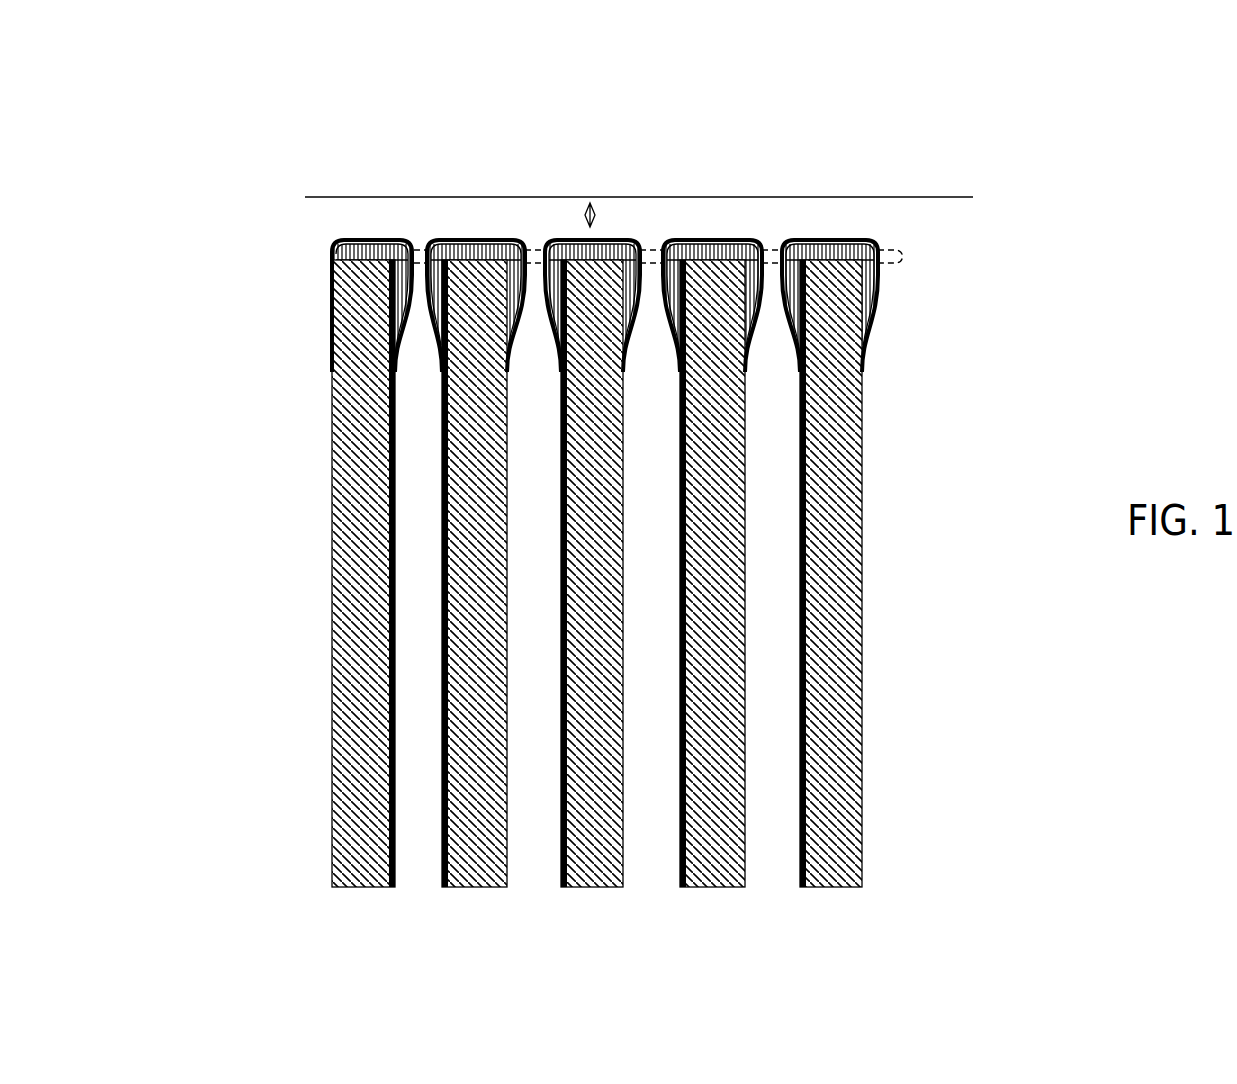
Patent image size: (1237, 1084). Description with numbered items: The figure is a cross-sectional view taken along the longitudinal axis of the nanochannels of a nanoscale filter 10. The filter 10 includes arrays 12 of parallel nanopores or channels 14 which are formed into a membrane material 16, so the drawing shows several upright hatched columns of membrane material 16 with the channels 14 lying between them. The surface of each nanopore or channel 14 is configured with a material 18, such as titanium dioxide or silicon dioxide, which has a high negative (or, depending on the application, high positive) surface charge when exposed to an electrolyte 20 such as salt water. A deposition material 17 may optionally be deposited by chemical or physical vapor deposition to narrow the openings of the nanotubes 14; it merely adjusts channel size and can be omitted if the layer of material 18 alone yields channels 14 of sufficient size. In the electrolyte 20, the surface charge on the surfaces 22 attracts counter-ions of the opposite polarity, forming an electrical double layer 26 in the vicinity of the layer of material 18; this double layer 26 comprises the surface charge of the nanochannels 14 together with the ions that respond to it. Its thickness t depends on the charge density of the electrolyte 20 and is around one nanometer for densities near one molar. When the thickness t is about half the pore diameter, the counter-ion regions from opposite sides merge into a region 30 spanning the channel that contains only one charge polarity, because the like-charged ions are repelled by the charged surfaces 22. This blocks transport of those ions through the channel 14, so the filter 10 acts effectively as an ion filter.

The nanoscale filter 10 is at (287, 697).
The arrays of parallel nanopores or channels 12 is at (887, 223).
The nanopores or channels 14 is at (535, 863).
The membrane material 16 is at (728, 622).
The deposition material 17 is at (862, 273).
The material with high surface charge 18 is at (340, 243).
The electrolyte 20 is at (690, 161).
The surfaces 22 is at (563, 223).
The electrical double layer 26 is at (772, 218).
The region across the pore or channel diameter 30 is at (653, 248).
The thickness of the electrical double layer t is at (587, 205).